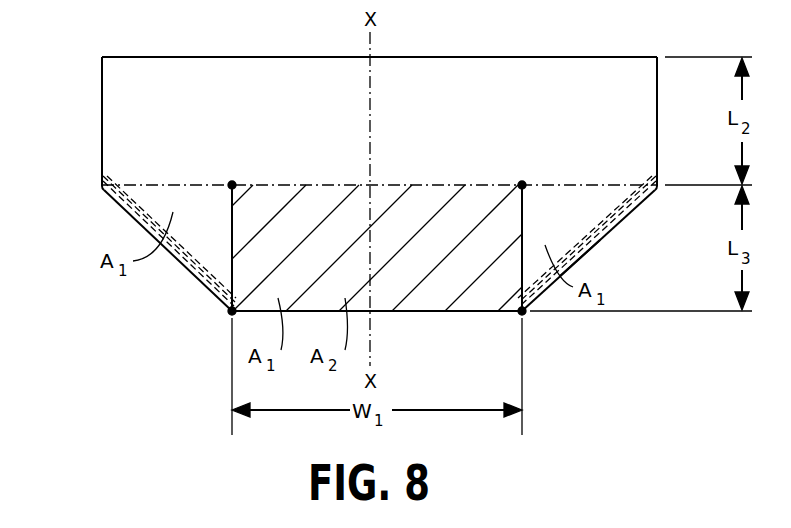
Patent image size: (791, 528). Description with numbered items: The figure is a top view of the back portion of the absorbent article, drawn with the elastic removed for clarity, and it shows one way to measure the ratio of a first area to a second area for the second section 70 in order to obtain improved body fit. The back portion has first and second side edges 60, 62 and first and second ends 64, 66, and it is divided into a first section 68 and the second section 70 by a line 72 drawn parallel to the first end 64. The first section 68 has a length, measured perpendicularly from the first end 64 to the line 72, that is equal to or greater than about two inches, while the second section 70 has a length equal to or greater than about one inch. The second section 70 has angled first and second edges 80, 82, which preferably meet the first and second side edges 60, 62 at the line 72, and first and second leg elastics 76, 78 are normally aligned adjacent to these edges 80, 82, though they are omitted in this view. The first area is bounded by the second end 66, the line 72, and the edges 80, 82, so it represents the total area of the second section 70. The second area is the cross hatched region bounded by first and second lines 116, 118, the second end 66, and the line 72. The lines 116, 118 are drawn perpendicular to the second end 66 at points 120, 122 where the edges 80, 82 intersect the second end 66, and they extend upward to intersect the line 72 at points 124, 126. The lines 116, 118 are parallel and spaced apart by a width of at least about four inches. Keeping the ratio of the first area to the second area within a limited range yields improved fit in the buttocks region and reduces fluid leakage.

The first side edge 60 is at (102, 127).
The second side edge 62 is at (658, 122).
The first end 64 is at (492, 57).
The second end 66 is at (427, 313).
The first section 68 is at (566, 74).
The second section 70 is at (586, 218).
The line 72 is at (556, 178).
The first leg elastic 76 is at (124, 202).
The second leg elastic 78 is at (624, 219).
The first edge 80 is at (183, 264).
The second edge 82 is at (586, 258).
The first line 116 is at (231, 244).
The second line 118 is at (528, 222).
The point 120 is at (229, 313).
The point 122 is at (524, 313).
The point 124 is at (233, 183).
The point 126 is at (522, 183).